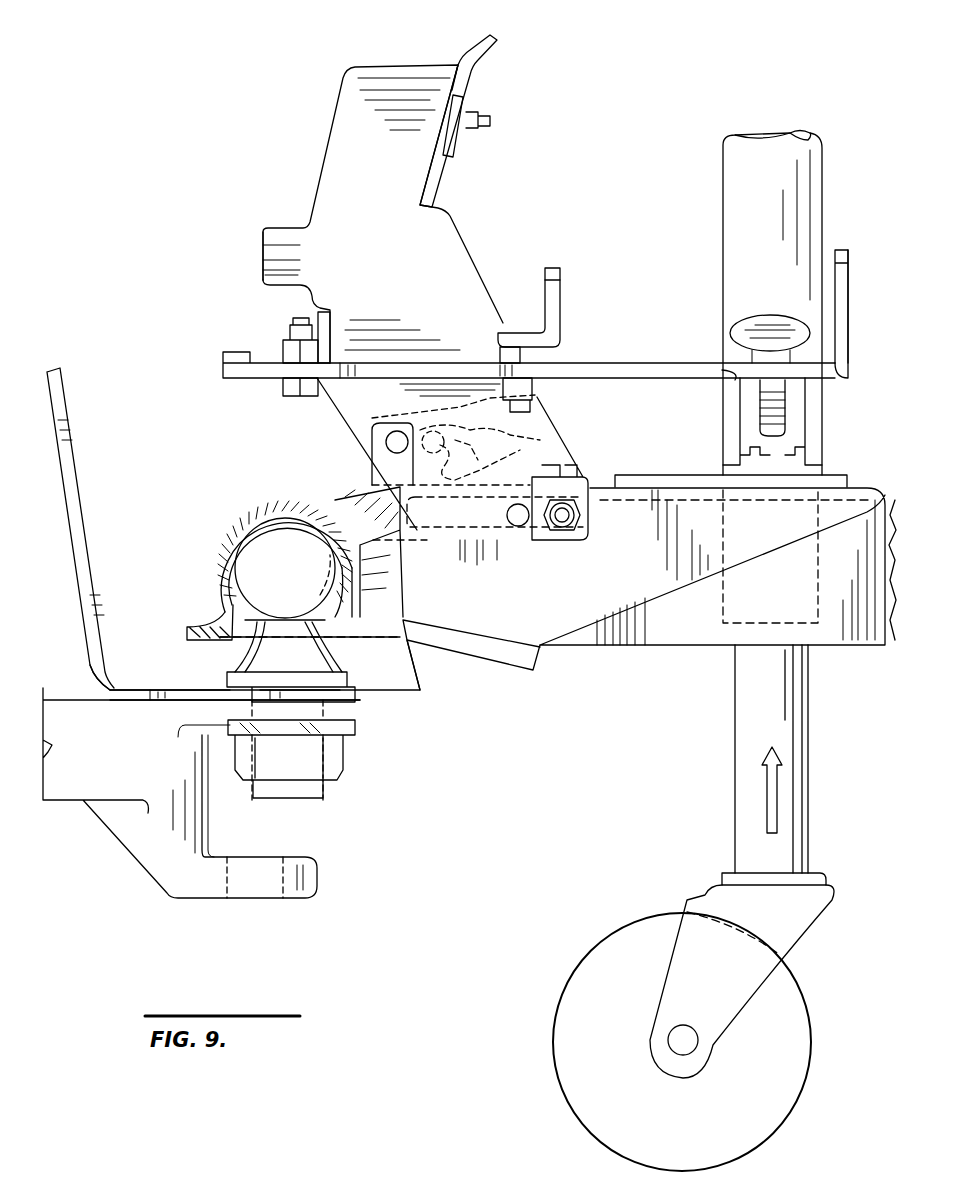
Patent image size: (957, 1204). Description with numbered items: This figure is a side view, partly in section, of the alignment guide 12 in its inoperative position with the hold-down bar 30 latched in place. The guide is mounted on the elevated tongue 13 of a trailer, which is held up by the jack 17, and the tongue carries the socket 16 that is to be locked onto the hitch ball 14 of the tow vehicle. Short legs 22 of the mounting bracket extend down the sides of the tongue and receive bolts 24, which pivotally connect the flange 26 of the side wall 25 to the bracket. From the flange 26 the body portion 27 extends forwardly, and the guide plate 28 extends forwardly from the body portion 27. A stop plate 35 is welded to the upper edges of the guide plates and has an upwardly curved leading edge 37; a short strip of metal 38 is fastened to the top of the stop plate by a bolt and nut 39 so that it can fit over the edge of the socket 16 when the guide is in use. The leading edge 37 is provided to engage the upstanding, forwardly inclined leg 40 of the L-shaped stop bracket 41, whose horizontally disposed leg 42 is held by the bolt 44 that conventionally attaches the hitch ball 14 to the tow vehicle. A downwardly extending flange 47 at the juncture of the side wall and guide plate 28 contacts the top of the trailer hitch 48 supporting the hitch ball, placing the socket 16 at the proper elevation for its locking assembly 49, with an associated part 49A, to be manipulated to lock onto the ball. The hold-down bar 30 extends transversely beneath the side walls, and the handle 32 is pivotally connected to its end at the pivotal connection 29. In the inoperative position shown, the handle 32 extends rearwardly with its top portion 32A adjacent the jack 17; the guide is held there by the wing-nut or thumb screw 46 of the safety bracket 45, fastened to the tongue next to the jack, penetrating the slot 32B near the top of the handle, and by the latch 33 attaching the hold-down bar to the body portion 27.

The alignment guide 12 is at (297, 190).
The tongue 13 is at (548, 675).
The hitch ball 14 is at (255, 543).
The socket 16 is at (268, 503).
The jack 17 is at (735, 752).
The legs 22 is at (580, 535).
The bolts 24 is at (552, 535).
The side wall 25 is at (552, 440).
The flange 26 is at (450, 537).
The body portion 27 is at (400, 252).
The guide plate 28 is at (358, 108).
The pivotal connection 29 is at (283, 340).
The hold-down bar 30 is at (330, 318).
The handle 32 is at (645, 362).
The top portion 32A is at (850, 262).
The slot 32B is at (722, 385).
The latch 33 is at (556, 298).
The stop plate 35 is at (455, 80).
The upwardly curved leading edge 37 is at (497, 42).
The strip of metal 38 is at (468, 152).
The bolt and nut 39 is at (490, 120).
The upstanding leg 40 is at (78, 470).
The L-shaped stop bracket 41 is at (100, 638).
The horizontally disposed leg 42 is at (195, 690).
The bolt 44 is at (305, 792).
The safety bracket 45 is at (800, 390).
The thumb screw 46 is at (770, 318).
The flange 47 is at (263, 250).
The trailer hitch 48 is at (340, 690).
The locking assembly 49 is at (373, 418).
The latch wedge 49A is at (340, 510).